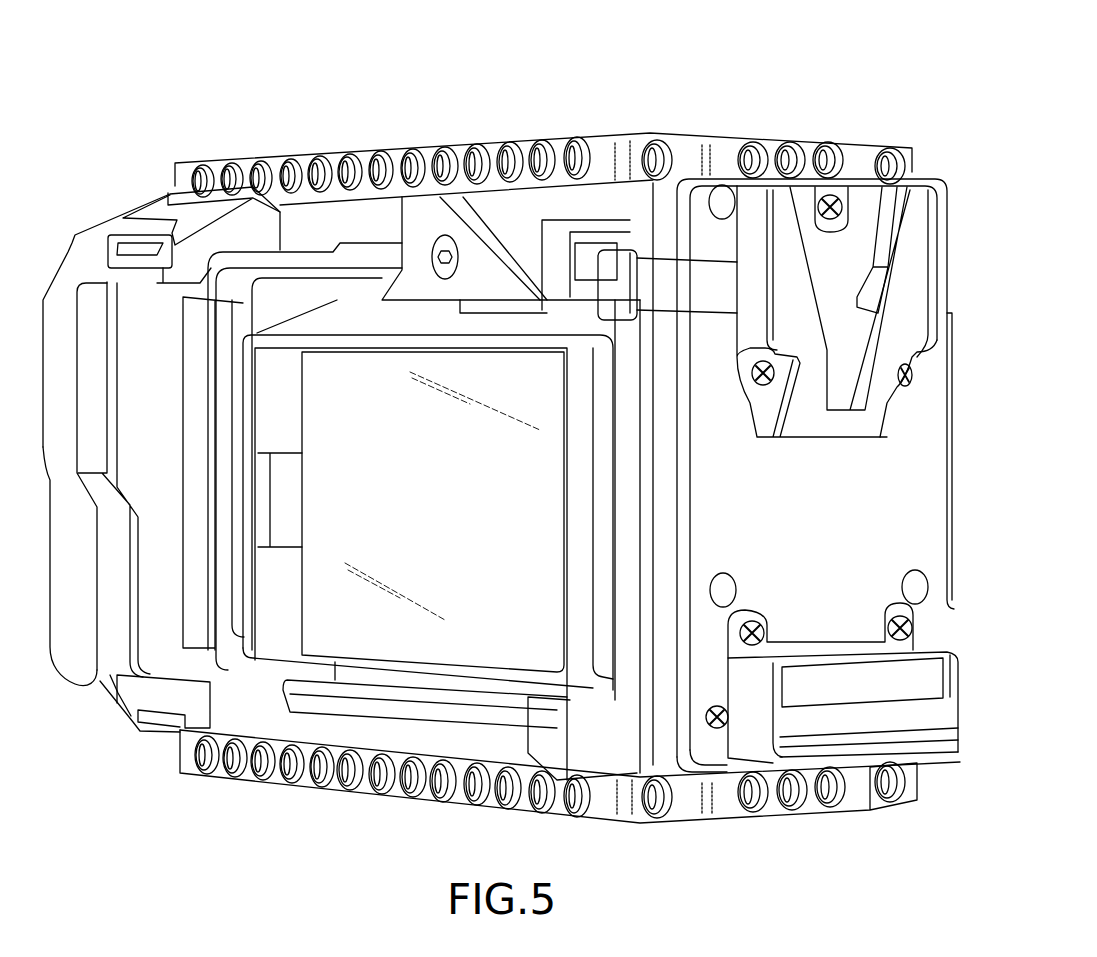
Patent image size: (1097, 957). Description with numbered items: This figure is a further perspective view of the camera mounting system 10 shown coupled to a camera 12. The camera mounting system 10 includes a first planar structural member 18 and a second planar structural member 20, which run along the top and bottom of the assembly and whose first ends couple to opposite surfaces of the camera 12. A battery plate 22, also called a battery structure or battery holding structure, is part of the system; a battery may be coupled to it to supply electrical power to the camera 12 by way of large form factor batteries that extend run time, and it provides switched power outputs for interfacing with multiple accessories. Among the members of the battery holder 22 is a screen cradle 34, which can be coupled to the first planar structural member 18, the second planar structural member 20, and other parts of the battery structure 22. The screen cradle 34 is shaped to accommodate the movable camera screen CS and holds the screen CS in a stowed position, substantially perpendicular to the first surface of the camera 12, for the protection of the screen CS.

The camera mounting system 10 is at (767, 90).
The camera 12 is at (110, 218).
The first planar structural member 18 is at (367, 790).
The second planar structural member 20 is at (423, 148).
The battery plate 22 is at (794, 482).
The screen cradle 34 is at (591, 745).
The camera screen CS is at (414, 516).